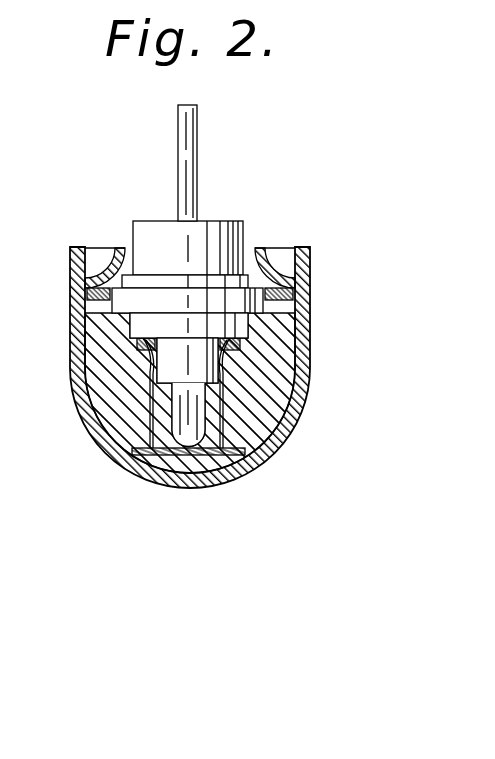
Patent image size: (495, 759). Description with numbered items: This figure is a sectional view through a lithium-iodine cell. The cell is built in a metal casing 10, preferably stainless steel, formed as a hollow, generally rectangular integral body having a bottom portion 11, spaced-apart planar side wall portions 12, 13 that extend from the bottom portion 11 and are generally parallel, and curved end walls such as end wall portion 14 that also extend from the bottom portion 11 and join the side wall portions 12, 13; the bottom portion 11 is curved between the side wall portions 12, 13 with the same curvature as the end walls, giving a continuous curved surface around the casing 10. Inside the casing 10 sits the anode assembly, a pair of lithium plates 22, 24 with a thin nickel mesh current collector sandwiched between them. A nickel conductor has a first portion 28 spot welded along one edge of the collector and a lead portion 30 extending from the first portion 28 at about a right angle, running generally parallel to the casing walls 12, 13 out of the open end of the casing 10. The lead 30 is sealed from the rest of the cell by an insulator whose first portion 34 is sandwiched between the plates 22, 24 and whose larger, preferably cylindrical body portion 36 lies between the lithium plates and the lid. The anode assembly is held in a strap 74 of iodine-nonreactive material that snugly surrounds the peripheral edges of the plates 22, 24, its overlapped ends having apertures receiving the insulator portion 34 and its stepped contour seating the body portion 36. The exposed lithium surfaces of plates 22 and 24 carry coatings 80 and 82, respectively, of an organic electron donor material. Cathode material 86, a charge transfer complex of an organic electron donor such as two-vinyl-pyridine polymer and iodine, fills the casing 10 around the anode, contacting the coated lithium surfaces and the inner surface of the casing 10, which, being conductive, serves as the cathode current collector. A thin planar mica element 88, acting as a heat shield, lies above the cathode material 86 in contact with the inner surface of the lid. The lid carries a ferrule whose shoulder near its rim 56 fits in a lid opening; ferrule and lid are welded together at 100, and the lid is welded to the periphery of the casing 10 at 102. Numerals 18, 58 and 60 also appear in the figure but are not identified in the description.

The casing 10 is at (264, 530).
The bottom portion 11 is at (222, 486).
The side wall portion 12 is at (75, 362).
The side wall portion 13 is at (310, 297).
The end wall portion 14 is at (140, 422).
The housing portion 18 is at (11, 268).
The lithium element 22 is at (130, 482).
The lithium element 24 is at (245, 487).
The first portion of conductor 28 is at (148, 497).
The lead portion 30 is at (181, 120).
The first portion of insulator 34 is at (205, 365).
The second body portion of insulator 36 is at (84, 306).
The rim 56 is at (11, 333).
The spring seat 58 is at (10, 359).
The retainer 60 is at (9, 305).
The strap 74 is at (262, 349).
The coating 80 is at (160, 430).
The coating 82 is at (245, 432).
The cathode material 86 is at (268, 382).
The heat shield element 88 is at (310, 262).
The weld 100 is at (122, 272).
The weld 102 is at (296, 246).